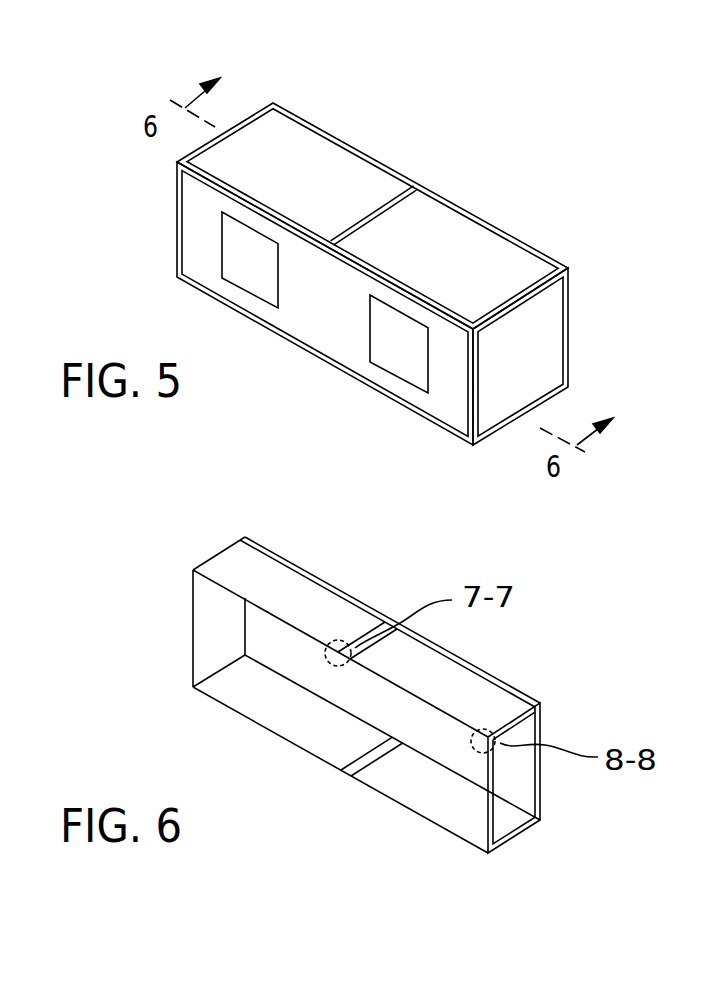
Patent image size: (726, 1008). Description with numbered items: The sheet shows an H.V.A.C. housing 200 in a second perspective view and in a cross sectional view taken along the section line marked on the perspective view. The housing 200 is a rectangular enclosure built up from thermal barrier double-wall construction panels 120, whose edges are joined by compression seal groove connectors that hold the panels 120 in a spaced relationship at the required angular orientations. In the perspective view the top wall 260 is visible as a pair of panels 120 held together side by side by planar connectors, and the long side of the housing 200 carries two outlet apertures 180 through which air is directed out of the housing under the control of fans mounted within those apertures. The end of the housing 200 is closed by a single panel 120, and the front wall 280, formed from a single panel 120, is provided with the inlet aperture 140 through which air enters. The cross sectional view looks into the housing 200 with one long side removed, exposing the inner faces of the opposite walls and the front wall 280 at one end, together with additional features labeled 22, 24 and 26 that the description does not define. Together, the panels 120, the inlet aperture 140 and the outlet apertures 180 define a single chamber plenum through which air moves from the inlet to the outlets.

In FIG. 5, the thermal barrier double-wall construction panel 120 is at (275, 135).
In FIG. 6, the thermal barrier double-wall construction panel 120 is at (250, 573).
In FIG. 5, the inlet aperture 140 is at (553, 302).
In FIG. 6, the inlet aperture 140 is at (510, 817).
In FIG. 5, the outlet aperture 180 is at (245, 277).
In FIG. 5, the H.V.A.C. housing 200 is at (426, 152).
In FIG. 6, the H.V.A.C. housing 200 is at (404, 581).
In FIG. 5, the top wall 260 is at (315, 168).
In FIG. 6, the front wall 280 is at (193, 618).
In FIG. 6, the back wall 22 is at (368, 708).
In FIG. 6, the bottom wall 24 is at (400, 775).
In FIG. 6, the top wall 26 is at (360, 600).